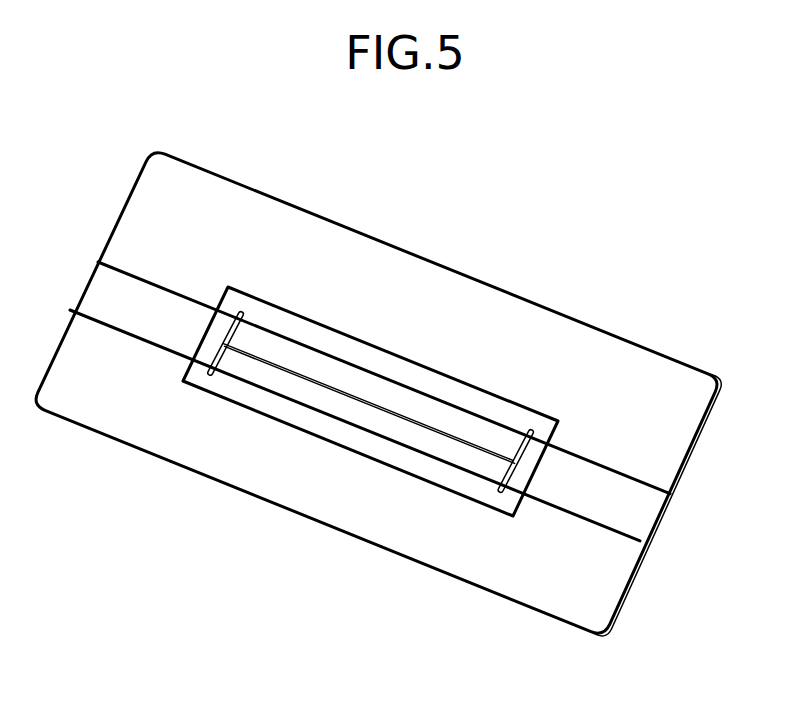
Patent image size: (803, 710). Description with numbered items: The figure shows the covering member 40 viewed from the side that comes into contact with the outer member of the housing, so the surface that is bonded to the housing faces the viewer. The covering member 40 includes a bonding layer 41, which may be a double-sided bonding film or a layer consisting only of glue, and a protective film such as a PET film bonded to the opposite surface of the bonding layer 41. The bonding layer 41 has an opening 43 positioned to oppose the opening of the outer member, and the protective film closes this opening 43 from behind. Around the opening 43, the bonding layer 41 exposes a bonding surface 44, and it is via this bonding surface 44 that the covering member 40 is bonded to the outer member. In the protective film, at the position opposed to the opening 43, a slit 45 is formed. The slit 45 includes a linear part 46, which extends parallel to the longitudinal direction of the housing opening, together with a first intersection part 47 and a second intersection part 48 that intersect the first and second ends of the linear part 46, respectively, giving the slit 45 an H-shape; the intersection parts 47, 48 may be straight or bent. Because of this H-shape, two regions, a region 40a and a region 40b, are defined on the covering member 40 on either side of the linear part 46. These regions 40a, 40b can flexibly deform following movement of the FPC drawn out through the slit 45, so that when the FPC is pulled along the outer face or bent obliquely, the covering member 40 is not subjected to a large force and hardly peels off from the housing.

The covering member 40 is at (588, 218).
The region 40a is at (281, 344).
The region 40b is at (297, 383).
The bonding layer 41 is at (628, 363).
The opening 43 is at (430, 468).
The bonding surface 44 is at (355, 425).
The slit 45 is at (552, 259).
The linear part 46 is at (366, 400).
The first intersection part 47 is at (233, 332).
The second intersection part 48 is at (517, 442).